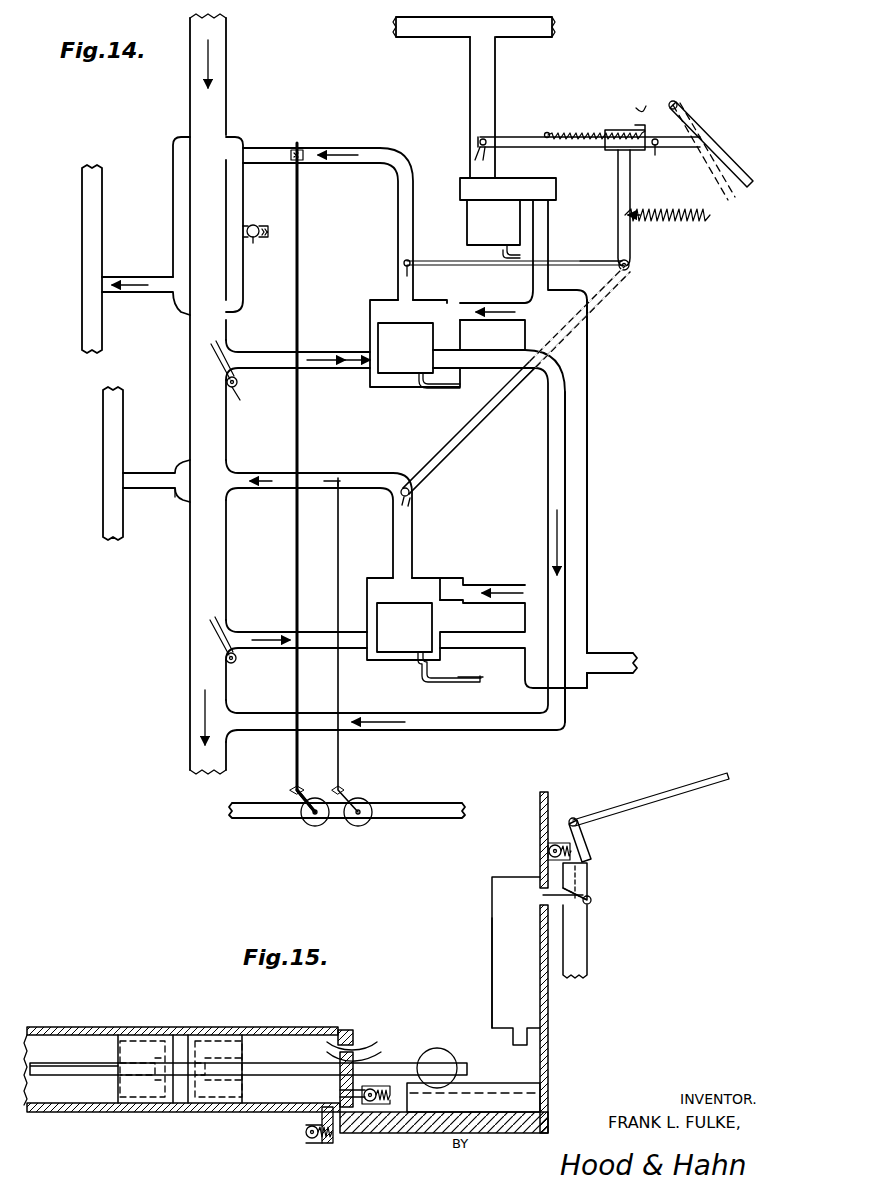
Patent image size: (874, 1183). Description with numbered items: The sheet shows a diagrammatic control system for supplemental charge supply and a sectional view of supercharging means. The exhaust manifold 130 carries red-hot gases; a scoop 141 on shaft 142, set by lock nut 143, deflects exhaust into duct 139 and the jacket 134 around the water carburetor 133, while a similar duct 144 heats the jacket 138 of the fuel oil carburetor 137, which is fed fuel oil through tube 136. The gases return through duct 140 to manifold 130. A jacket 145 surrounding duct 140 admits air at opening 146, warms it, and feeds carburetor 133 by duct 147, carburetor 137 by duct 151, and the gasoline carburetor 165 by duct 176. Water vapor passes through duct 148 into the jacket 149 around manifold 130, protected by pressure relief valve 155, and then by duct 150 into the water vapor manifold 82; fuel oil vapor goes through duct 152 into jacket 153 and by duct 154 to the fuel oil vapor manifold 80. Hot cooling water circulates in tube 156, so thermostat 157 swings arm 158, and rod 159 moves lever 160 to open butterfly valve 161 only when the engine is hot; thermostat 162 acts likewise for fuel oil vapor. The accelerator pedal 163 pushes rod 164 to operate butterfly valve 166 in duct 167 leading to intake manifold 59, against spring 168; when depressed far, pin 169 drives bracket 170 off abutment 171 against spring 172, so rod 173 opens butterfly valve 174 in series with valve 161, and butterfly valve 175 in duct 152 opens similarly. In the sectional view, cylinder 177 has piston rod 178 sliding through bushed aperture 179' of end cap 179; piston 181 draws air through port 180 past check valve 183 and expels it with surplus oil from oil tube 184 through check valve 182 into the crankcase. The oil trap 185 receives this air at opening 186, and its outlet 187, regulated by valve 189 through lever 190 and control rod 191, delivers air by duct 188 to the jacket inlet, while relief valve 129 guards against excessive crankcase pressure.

In FIG. 14, the exhaust manifold 130 is at (226, 97).
In FIG. 14, the jacket 149 is at (173, 190).
In FIG. 14, the water vapor manifold 82 is at (82, 233).
In FIG. 14, the duct 150 is at (152, 277).
In FIG. 14, the lever 160 is at (266, 224).
In FIG. 14, the pressure relief valve 155 is at (256, 244).
In FIG. 14, the butterfly valve 161 is at (286, 150).
In FIG. 14, the duct 148 is at (398, 210).
In FIG. 14, the rod 159 is at (297, 302).
In FIG. 14, the intake manifold 59 is at (430, 37).
In FIG. 14, the duct 167 is at (470, 85).
In FIG. 14, the rod 164 is at (594, 150).
In FIG. 14, the gasoline carburetor 165 is at (493, 229).
In FIG. 14, the duct 176 is at (552, 205).
In FIG. 14, the butterfly valve 166 is at (484, 158).
In FIG. 14, the spring 168 is at (576, 128).
In FIG. 14, the abutment 171 is at (632, 110).
In FIG. 14, the pin 169 is at (658, 158).
In FIG. 14, the accelerator pedal 163 is at (751, 182).
In FIG. 14, the bracket 170 is at (618, 220).
In FIG. 14, the spring 172 is at (670, 222).
In FIG. 14, the butterfly valve 174 is at (406, 270).
In FIG. 14, the rod 173 is at (582, 262).
In FIG. 14, the duct 147 is at (488, 304).
In FIG. 14, the jacket 134 is at (368, 340).
In FIG. 14, the carburetor 133 is at (419, 355).
In FIG. 14, the duct 139 is at (352, 368).
In FIG. 14, the scoop 141 is at (210, 368).
In FIG. 14, the lock nut 143 is at (237, 382).
In FIG. 14, the shaft 142 is at (238, 398).
In FIG. 14, the fuel oil vapor manifold 80 is at (103, 474).
In FIG. 14, the duct 154 is at (158, 470).
In FIG. 14, the jacket 153 is at (178, 514).
In FIG. 14, the duct 152 is at (416, 536).
In FIG. 14, the butterfly valve 175 is at (419, 498).
In FIG. 14, the thermostat 162 is at (358, 826).
In FIG. 14, the duct 151 is at (495, 586).
In FIG. 14, the carburetor 137 is at (403, 619).
In FIG. 14, the duct 144 is at (268, 632).
In FIG. 14, the jacket 138 is at (414, 670).
In FIG. 14, the tube 136 is at (470, 678).
In FIG. 14, the duct 140 is at (567, 470).
In FIG. 14, the jacket 145 is at (587, 520).
In FIG. 14, the opening 146 is at (620, 656).
In FIG. 14, the arm 158 is at (306, 794).
In FIG. 14, the thermostat 157 is at (314, 826).
In FIG. 14, the tube 156 is at (430, 820).
In FIG. 15, the cylinder 177 is at (116, 1026).
In FIG. 15, the piston rod 178 is at (273, 1065).
In FIG. 15, the piston 181 is at (226, 1040).
In FIG. 15, the end cap 179 is at (443, 962).
In FIG. 15, the oil tube 184 is at (374, 1042).
In FIG. 15, the bushed aperture 179' is at (455, 1071).
In FIG. 15, the port 180 is at (331, 1107).
In FIG. 15, the check valve 182 is at (370, 1106).
In FIG. 15, the check valve 183 is at (306, 1141).
In FIG. 15, the opening 186 is at (512, 1041).
In FIG. 15, the oil trap 185 is at (492, 918).
In FIG. 15, the outlet 187 is at (543, 895).
In FIG. 15, the relief valve 129 is at (557, 836).
In FIG. 15, the lever 190 is at (586, 842).
In FIG. 15, the control rod 191 is at (710, 790).
In FIG. 15, the valve 189 is at (590, 884).
In FIG. 15, the duct 188 is at (590, 944).